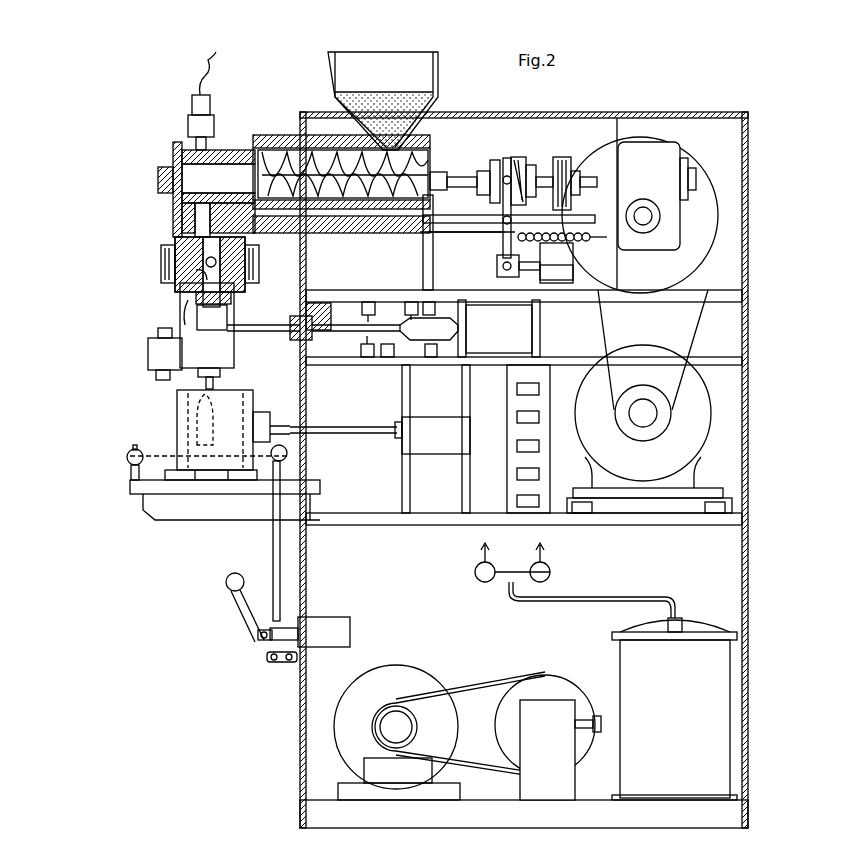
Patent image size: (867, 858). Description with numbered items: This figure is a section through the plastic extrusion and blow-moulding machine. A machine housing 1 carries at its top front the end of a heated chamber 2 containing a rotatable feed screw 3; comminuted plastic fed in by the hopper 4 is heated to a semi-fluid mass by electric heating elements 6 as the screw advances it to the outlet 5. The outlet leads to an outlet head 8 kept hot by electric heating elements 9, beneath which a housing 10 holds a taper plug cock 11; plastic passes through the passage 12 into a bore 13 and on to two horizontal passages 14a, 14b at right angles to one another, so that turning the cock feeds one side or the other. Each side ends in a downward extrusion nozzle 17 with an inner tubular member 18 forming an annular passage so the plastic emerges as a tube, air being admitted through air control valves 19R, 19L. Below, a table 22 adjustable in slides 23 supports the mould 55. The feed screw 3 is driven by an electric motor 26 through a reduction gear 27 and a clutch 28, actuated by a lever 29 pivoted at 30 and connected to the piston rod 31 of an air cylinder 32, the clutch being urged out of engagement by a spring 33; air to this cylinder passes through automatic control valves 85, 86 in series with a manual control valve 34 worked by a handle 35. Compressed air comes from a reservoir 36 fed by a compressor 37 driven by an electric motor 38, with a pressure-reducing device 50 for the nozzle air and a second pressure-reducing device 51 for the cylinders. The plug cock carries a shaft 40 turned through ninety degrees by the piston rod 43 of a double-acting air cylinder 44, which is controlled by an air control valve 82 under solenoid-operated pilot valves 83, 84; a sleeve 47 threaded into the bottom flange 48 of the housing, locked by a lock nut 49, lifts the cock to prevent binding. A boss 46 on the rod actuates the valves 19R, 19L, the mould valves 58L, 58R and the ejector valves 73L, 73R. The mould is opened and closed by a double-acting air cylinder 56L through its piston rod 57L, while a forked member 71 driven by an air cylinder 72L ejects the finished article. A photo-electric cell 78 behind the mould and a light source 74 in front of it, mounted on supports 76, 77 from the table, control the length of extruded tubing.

The machine housing 1 is at (645, 112).
The heated chamber 2 is at (258, 140).
The feed screw 3 is at (408, 170).
The hopper 4 is at (438, 72).
The outlet 5 is at (244, 188).
The electric heating elements 6 is at (276, 150).
The outlet head 8 is at (166, 167).
The electric heating elements 9 is at (190, 145).
The housing 10 is at (165, 252).
The taper plug cock 11 is at (250, 270).
The passage 12 is at (173, 214).
The bore 13 is at (225, 222).
The horizontal passage 14a is at (222, 258).
The horizontal passage 14b is at (194, 280).
The extrusion nozzle 17 is at (220, 373).
The inner tubular member 18 is at (215, 384).
The air control valve 19L is at (366, 358).
The air control valve 19R is at (432, 300).
The table 22 is at (143, 500).
The slides 23 is at (273, 552).
The electric motor 26 is at (694, 375).
The reduction gear 27 is at (668, 157).
The clutch 28 is at (518, 158).
The lever 29 is at (500, 232).
The pivot 30 is at (500, 218).
The piston rod 31 is at (505, 252).
The air cylinder 32 is at (555, 285).
The spring 33 is at (585, 240).
The manual control valve 34 is at (328, 642).
The handle 35 is at (250, 612).
The compressed air reservoir 36 is at (680, 717).
The compressor 37 is at (557, 753).
The electric motor 38 is at (345, 724).
The shaft 40 is at (236, 324).
The piston rod 43 is at (344, 337).
The double-acting air cylinder 44 is at (528, 338).
The boss 46 is at (429, 330).
The sleeve 47 is at (197, 330).
The bottom flange 48 is at (232, 296).
The lock nut 49 is at (186, 308).
The pressure-reducing device 50 is at (480, 582).
The pressure-reducing device 51 is at (550, 570).
The mould 55 is at (177, 432).
The double-acting air cylinder 56L is at (438, 452).
The piston rod 57L is at (355, 436).
The air valve 58L is at (388, 358).
The air valve 58R is at (410, 300).
The forked member 71 is at (180, 380).
The air cylinder 72L is at (158, 333).
The control valve 73L is at (431, 358).
The control valve 73R is at (368, 300).
The light source 74 is at (127, 457).
The support 76 is at (131, 484).
The support 77 is at (285, 432).
The photo-electric cell 78 is at (288, 452).
The air control valve 82 is at (545, 450).
The solenoid-operated pilot valve 83 is at (540, 439).
The solenoid-operated pilot valve 84 is at (545, 495).
The automatic control valve 85 is at (545, 421).
The automatic control valve 86 is at (545, 470).